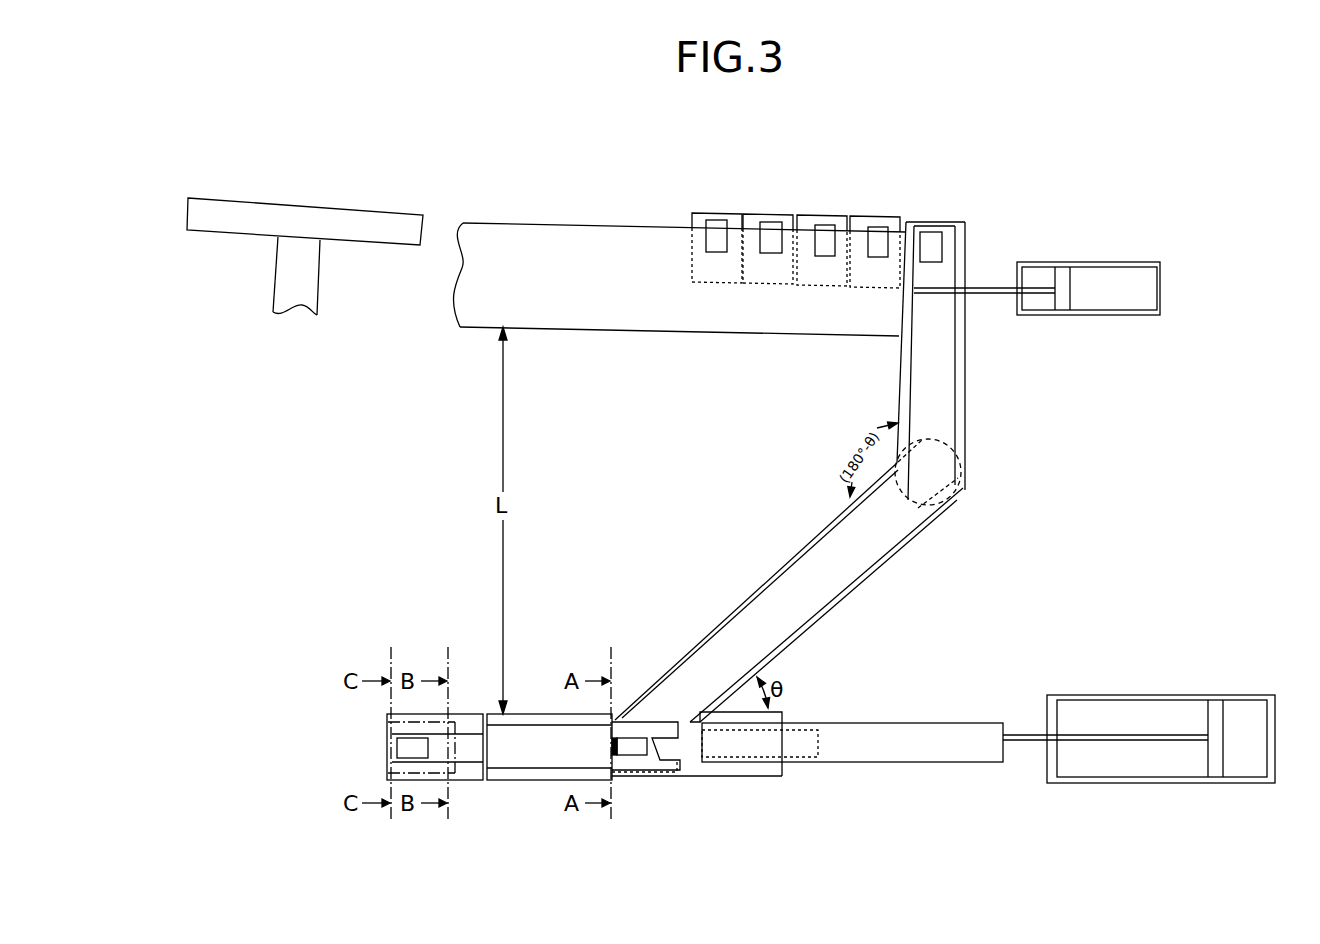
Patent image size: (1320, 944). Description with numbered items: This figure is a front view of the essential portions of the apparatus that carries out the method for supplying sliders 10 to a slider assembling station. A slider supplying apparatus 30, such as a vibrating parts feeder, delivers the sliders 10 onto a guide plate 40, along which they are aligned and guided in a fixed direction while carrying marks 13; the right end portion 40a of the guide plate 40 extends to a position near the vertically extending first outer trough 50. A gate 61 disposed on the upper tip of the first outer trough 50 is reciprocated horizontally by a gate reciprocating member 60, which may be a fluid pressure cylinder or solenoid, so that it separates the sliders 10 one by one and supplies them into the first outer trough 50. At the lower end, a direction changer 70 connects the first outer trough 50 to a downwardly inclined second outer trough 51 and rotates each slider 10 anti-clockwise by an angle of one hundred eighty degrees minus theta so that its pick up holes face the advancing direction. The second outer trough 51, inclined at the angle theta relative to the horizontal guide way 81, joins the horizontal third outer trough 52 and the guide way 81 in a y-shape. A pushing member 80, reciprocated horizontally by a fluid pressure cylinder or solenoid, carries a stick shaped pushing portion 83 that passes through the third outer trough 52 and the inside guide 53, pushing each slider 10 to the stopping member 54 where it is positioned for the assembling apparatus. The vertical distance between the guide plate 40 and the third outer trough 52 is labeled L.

The slider 10 is at (703, 212).
The workpiece mark 13 is at (782, 186).
The slider supplying apparatus 30 is at (352, 214).
The guide plate 40 is at (483, 317).
The right end portion 40a is at (912, 328).
The first outer trough 50 is at (900, 398).
The second outer trough 51 is at (733, 604).
The third outer trough 52 is at (530, 718).
The inside guide 53 is at (400, 742).
The stopping member 54 is at (393, 750).
The gate reciprocating member 60 is at (1112, 262).
The gate 61 is at (930, 295).
The direction changer 70 is at (945, 467).
The pushing member 80 is at (1143, 695).
The guide way 81 is at (790, 712).
The pushing portion 83 is at (882, 735).